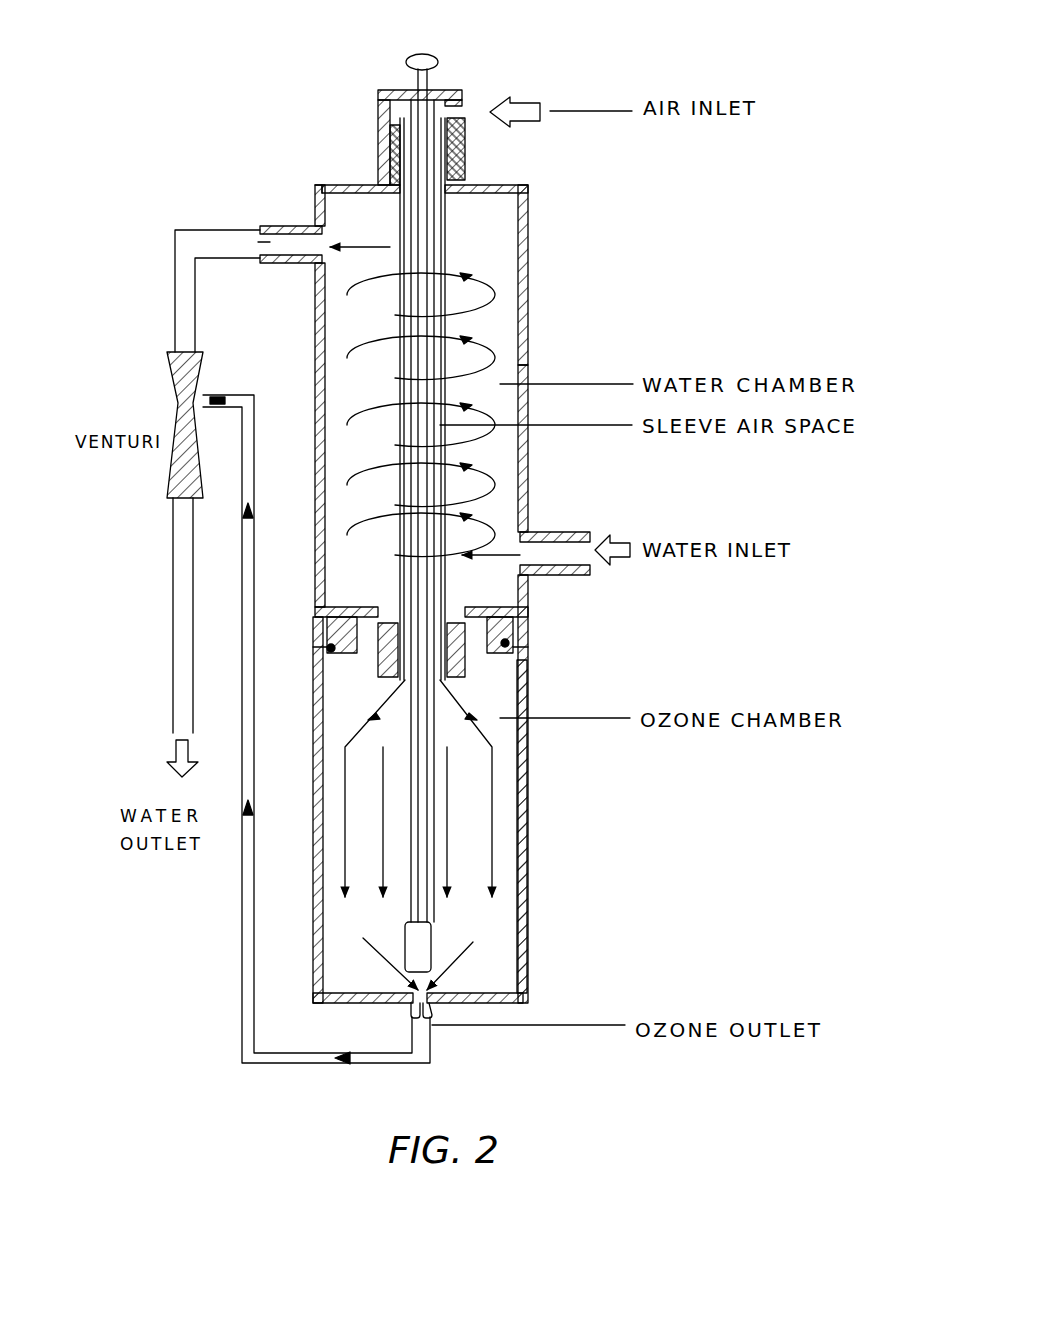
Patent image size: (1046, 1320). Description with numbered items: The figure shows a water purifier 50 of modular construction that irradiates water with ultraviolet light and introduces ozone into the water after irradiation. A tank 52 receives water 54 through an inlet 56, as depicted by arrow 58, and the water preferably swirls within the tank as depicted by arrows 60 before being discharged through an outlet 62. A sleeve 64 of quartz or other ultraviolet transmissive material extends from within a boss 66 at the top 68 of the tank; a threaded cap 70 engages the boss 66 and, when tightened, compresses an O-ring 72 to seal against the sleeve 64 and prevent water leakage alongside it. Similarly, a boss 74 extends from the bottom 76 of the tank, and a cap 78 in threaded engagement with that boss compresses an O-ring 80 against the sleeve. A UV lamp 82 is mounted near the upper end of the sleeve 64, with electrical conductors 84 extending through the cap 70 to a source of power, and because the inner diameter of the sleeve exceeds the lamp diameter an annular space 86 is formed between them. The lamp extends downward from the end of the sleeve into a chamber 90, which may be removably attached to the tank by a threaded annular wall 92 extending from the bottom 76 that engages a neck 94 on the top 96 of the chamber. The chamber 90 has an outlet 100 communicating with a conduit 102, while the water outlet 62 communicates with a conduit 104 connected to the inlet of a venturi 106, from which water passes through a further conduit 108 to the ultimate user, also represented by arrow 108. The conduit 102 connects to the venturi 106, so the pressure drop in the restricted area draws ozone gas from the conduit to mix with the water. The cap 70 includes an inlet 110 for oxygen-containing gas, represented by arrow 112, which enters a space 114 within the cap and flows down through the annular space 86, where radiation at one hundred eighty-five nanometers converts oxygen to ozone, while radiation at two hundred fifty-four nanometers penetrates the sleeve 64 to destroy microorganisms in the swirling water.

The water purifier 50 is at (681, 316).
The tank 52 is at (528, 472).
The water 54 is at (524, 483).
The inlet 56 is at (577, 528).
The arrow 58 is at (614, 544).
The arrows 60 is at (500, 290).
The outlet 62 is at (280, 226).
The sleeve 64 is at (470, 327).
The boss 66 is at (500, 187).
The top 68 is at (320, 185).
The threaded cap 70 is at (386, 90).
The O-ring 72 is at (467, 135).
The boss 74 is at (365, 610).
The bottom 76 is at (335, 612).
The cap 78 is at (468, 676).
The O-ring 80 is at (378, 665).
The UV lamp 82 is at (445, 222).
The electrical conductors 84 is at (430, 60).
The annular space 86 is at (440, 390).
The chamber 90 is at (528, 906).
The threaded annular wall 92 is at (513, 635).
The neck 94 is at (507, 645).
The top 96 is at (327, 646).
The outlet 100 is at (440, 991).
The conduit 102 is at (215, 230).
The conduit 104 is at (200, 375).
The venturi 106 is at (172, 652).
The conduit 108 is at (172, 765).
The inlet 110 is at (460, 105).
The arrow 112 is at (500, 110).
The space 114 is at (401, 90).